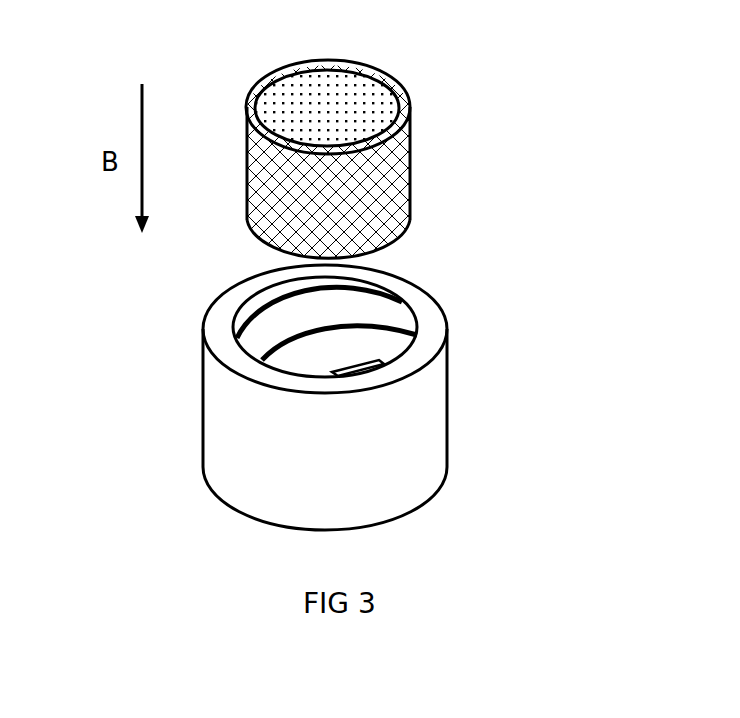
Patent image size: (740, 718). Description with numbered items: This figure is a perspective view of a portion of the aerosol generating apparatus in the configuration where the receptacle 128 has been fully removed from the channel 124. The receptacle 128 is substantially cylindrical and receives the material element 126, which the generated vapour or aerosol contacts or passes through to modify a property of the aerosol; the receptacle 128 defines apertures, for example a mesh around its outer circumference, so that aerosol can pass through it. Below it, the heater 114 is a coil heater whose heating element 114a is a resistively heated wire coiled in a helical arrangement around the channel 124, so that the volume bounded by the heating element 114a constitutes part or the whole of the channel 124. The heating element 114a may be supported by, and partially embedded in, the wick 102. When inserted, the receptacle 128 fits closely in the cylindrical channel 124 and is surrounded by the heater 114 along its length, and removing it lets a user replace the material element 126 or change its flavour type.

The wick 102 is at (432, 327).
The heater 114 is at (400, 327).
The heating element 114a is at (358, 368).
The channel 124 is at (323, 350).
The material element 126 is at (363, 105).
The receptacle 128 is at (385, 182).